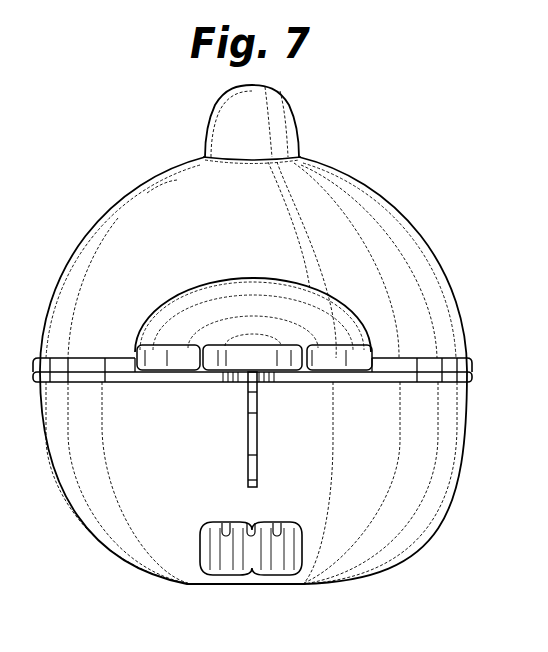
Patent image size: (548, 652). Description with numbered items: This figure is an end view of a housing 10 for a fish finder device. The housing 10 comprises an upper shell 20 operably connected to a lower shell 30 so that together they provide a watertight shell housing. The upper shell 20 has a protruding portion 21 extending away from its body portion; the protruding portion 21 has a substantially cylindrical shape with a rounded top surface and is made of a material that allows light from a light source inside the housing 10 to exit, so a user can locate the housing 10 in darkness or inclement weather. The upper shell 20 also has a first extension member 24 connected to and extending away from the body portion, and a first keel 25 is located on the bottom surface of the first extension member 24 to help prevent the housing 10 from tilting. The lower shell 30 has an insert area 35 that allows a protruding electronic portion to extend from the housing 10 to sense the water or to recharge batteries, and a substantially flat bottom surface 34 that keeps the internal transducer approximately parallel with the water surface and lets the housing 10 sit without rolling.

The housing 10 is at (408, 72).
The upper shell 20 is at (203, 248).
The protruding portion 21 is at (233, 130).
The first extension member 24 is at (278, 305).
The first keel 25 is at (253, 433).
The lower shell 30 is at (167, 457).
The substantially flat bottom surface 34 is at (243, 585).
The insert area 35 is at (273, 542).